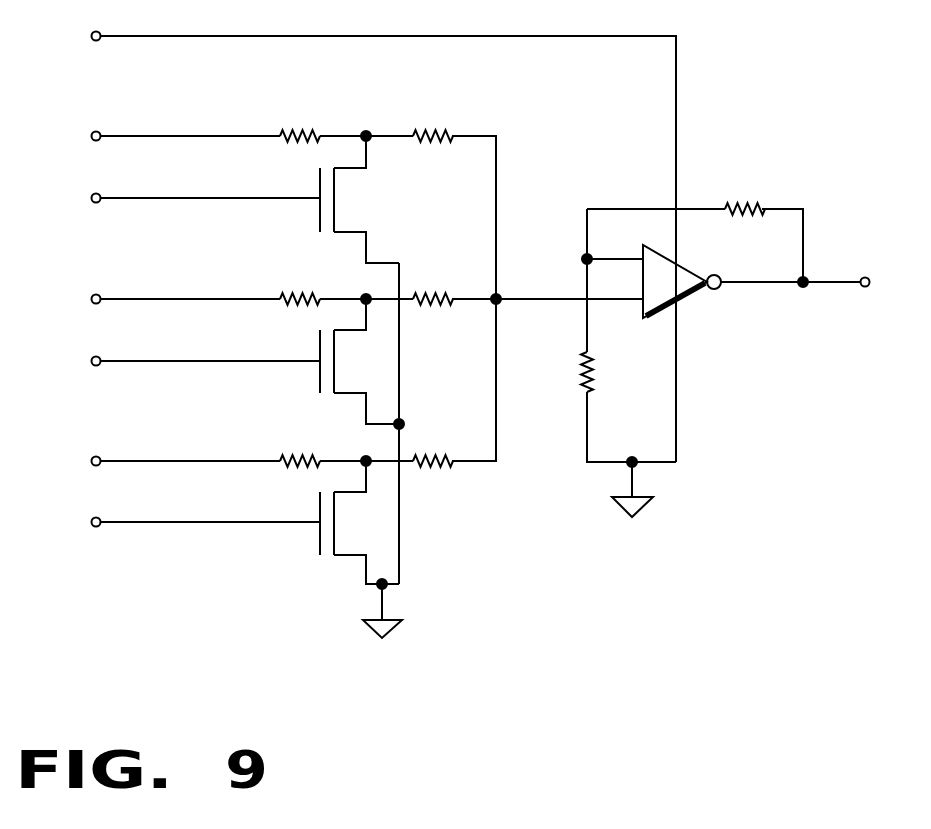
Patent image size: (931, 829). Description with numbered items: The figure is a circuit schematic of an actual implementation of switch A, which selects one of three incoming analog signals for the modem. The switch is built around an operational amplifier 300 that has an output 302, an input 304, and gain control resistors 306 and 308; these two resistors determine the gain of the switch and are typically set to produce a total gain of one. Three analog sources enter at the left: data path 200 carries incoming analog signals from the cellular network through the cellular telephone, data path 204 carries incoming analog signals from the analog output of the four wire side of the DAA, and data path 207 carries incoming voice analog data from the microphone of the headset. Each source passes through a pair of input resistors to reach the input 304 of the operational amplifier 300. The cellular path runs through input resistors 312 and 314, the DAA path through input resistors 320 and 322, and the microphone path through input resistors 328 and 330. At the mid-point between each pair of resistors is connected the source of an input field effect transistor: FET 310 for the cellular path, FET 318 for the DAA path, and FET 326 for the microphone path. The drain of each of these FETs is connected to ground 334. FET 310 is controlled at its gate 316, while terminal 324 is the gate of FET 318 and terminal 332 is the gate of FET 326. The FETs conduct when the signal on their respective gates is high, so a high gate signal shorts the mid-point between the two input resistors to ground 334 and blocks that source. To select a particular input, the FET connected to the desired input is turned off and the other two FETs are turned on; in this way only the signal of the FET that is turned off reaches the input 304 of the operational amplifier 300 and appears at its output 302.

The data path 200 is at (92, 132).
The data path 204 is at (92, 295).
The data path 207 is at (92, 457).
The operational amplifier 300 is at (682, 281).
The output 302 is at (860, 289).
The input 304 is at (501, 295).
The gain control resistor 306 is at (739, 202).
The gain control resistor 308 is at (583, 366).
The field effect transistor 310 is at (359, 199).
The input resistor 312 is at (296, 128).
The input resistor 314 is at (437, 128).
The gate 316 is at (92, 194).
The field effect transistor 318 is at (362, 364).
The input resistor 320 is at (296, 290).
The input resistor 322 is at (437, 290).
The terminal 324 is at (92, 357).
The field effect transistor 326 is at (359, 522).
The input resistor 328 is at (296, 452).
The input resistor 330 is at (437, 452).
The terminal 332 is at (92, 519).
The ground 334 is at (399, 632).